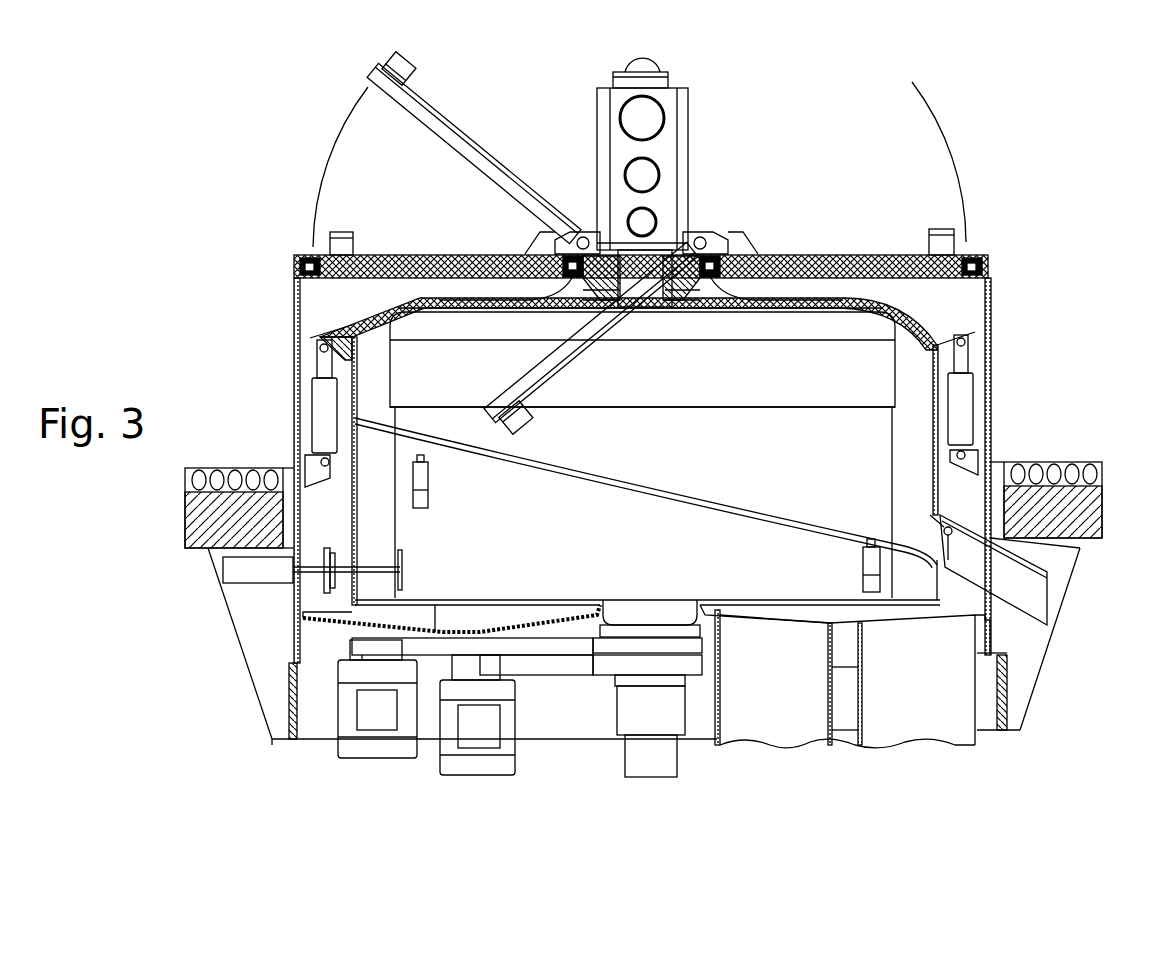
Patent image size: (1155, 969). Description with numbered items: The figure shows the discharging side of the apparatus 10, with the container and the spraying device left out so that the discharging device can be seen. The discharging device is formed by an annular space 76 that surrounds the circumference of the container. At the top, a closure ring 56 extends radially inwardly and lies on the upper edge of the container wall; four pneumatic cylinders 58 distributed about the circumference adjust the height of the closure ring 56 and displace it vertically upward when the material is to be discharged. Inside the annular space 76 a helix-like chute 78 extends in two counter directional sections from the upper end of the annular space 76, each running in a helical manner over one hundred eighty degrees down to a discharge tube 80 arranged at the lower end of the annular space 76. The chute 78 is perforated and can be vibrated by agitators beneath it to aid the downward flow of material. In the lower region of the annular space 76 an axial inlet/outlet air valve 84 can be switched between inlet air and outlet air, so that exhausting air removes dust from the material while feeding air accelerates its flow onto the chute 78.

The apparatus 10 is at (1000, 178).
The closure ring 56 is at (422, 300).
The pneumatic cylinders 58 is at (323, 402).
The annular space 76 is at (907, 446).
The chute 78 is at (516, 470).
The discharge tube 80 is at (1030, 590).
The axial inlet/outlet air valve 84 is at (350, 565).